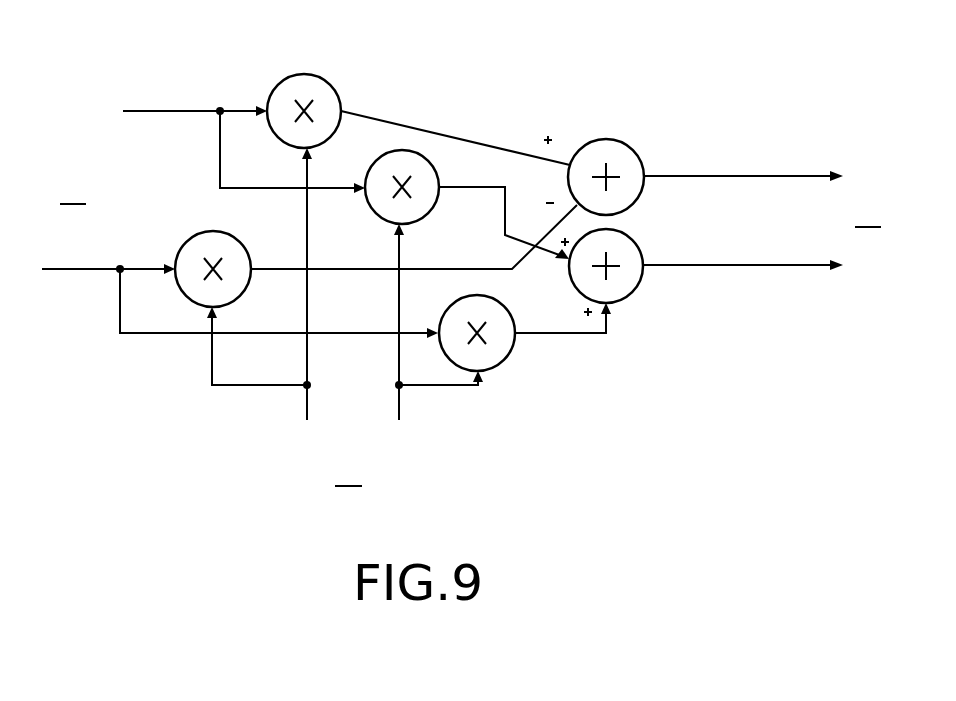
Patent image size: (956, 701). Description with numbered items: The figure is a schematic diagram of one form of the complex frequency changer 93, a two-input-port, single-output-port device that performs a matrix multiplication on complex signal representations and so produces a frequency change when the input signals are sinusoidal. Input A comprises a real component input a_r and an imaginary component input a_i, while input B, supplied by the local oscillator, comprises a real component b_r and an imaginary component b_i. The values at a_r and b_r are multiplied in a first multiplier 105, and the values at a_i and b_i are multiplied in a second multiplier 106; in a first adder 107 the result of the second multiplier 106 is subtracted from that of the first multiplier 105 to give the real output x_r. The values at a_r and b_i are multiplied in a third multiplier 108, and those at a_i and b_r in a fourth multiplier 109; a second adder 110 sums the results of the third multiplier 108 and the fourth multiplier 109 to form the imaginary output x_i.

The complex frequency changer 93 is at (716, 357).
The first multiplier 105 is at (326, 79).
The second multiplier 106 is at (186, 240).
The first adder 107 is at (624, 142).
The third multiplier 108 is at (436, 170).
The fourth multiplier 109 is at (508, 356).
The second adder 110 is at (640, 284).